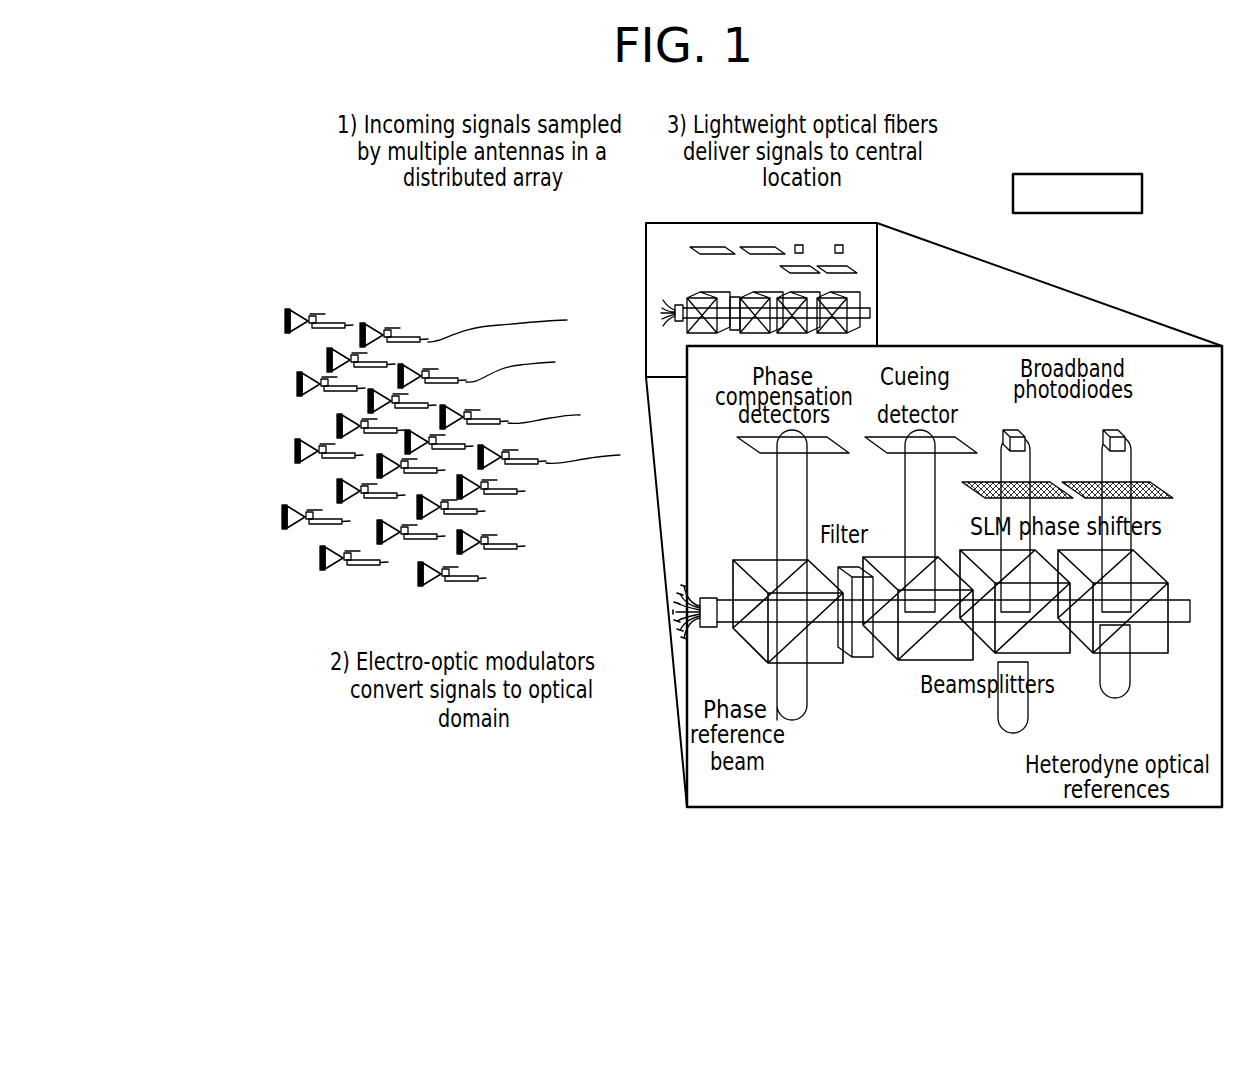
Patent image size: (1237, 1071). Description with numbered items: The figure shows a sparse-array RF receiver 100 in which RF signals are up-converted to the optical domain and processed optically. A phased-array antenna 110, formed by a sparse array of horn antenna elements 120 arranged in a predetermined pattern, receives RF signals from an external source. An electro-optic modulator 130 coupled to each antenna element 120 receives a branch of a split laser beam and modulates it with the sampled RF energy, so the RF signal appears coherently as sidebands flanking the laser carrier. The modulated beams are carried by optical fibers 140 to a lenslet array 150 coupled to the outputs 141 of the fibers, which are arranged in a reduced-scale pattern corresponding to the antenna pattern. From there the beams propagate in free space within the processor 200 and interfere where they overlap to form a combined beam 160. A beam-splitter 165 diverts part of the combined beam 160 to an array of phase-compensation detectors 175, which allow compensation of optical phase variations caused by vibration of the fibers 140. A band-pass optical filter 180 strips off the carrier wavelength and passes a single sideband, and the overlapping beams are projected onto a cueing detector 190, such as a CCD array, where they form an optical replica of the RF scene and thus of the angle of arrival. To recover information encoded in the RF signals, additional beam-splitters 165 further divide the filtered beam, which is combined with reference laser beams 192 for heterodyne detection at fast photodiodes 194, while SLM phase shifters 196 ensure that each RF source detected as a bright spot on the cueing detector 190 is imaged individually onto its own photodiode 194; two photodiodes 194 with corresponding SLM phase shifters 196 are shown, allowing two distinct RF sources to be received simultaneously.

The receiver 100 is at (251, 174).
The phased-array antenna 110 is at (262, 622).
The antenna elements 120 is at (296, 384).
The electro-optic modulator 130 is at (362, 568).
The optical fibers 140 is at (477, 324).
The outputs of the fibers 141 is at (672, 628).
The lenslet array 150 is at (707, 596).
The combined beam 160 is at (724, 582).
The beam-splitter 165 is at (758, 650).
The array of detectors 175 is at (755, 447).
The band-pass optical filter 180 is at (860, 660).
The cueing detector 190 is at (893, 447).
The reference laser beams 192 is at (1000, 718).
The fast photodiodes 194 is at (1026, 433).
The SLM phase shifters 196 is at (1038, 482).
The processor 200 is at (1100, 173).